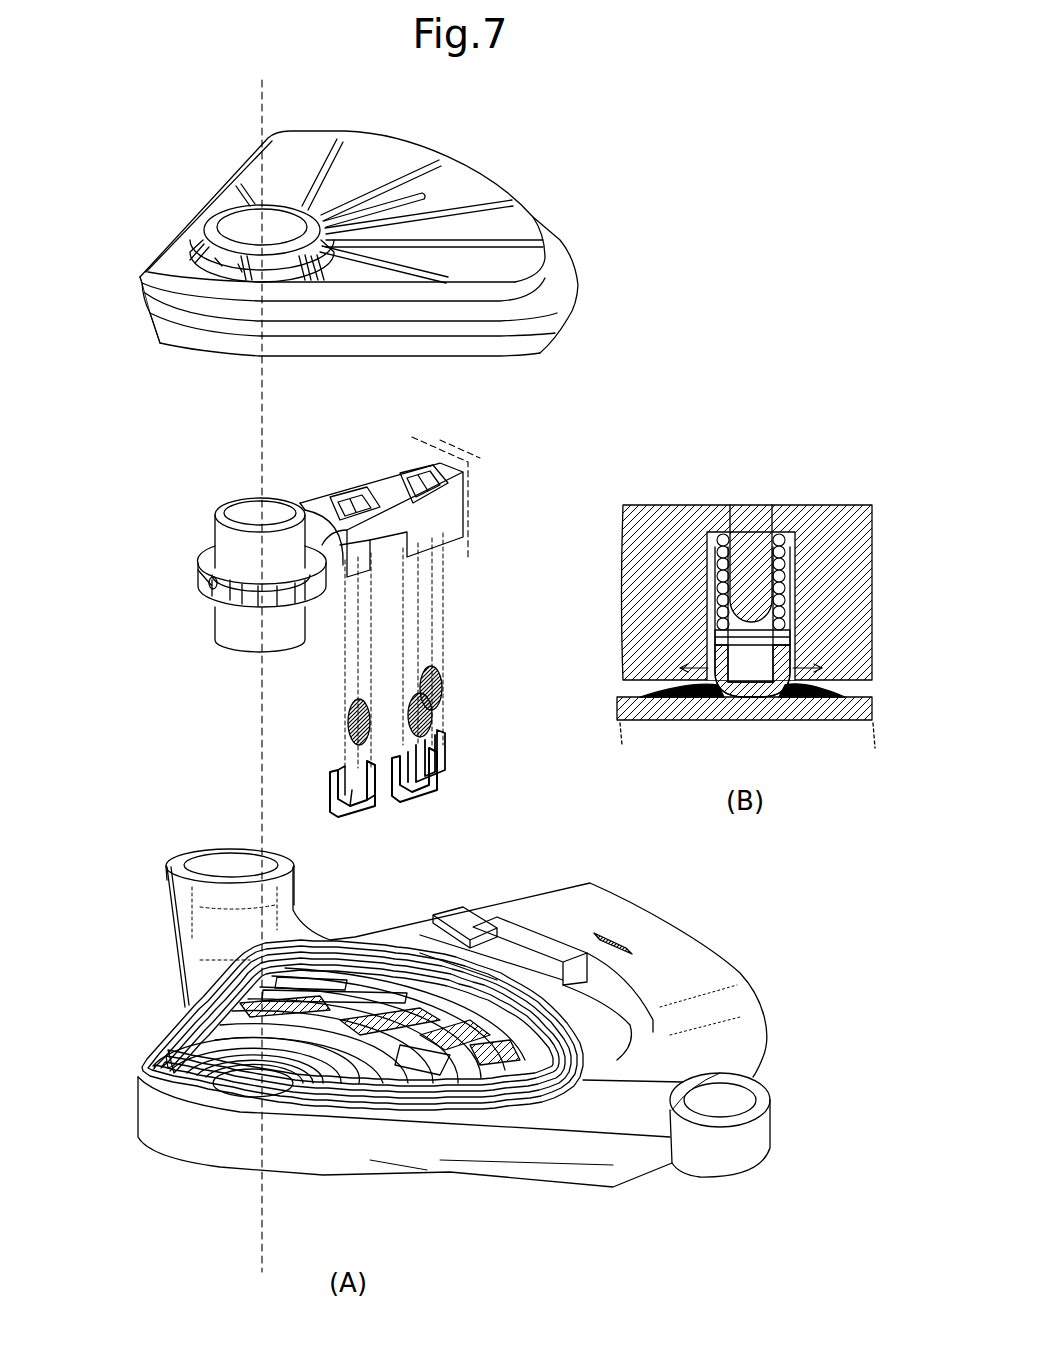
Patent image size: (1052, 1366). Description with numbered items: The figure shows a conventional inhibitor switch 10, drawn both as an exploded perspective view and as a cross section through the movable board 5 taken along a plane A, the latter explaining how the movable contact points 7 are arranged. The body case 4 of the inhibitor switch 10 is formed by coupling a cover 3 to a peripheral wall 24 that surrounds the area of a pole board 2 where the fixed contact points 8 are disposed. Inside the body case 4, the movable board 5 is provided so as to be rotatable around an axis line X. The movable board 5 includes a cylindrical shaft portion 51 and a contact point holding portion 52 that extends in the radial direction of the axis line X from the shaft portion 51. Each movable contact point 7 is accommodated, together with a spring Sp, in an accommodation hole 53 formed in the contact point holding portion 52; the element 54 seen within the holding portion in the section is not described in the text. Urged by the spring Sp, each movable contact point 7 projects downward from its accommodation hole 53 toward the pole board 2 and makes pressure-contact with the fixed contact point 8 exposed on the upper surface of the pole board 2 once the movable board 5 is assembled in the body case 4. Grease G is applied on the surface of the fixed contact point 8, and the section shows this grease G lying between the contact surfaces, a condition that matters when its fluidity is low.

The inhibitor switch 10 is at (591, 206).
The cover 3 is at (167, 338).
The body case 4 is at (84, 523).
The pole board 2 is at (205, 845).
The movable board 5 is at (290, 470).
The cylindrical shaft portion 51 is at (212, 530).
The contact point holding portion 52 is at (377, 490).
The accommodation hole 53 is at (360, 485).
The holder pin 54 is at (750, 583).
The movable contact point 7 is at (325, 794).
The spring Sp is at (348, 728).
The fixed contact point 8 is at (357, 970).
The peripheral wall 24 is at (158, 1038).
The grease G is at (717, 703).
The plane A is at (470, 562).
The axis line X is at (261, 661).